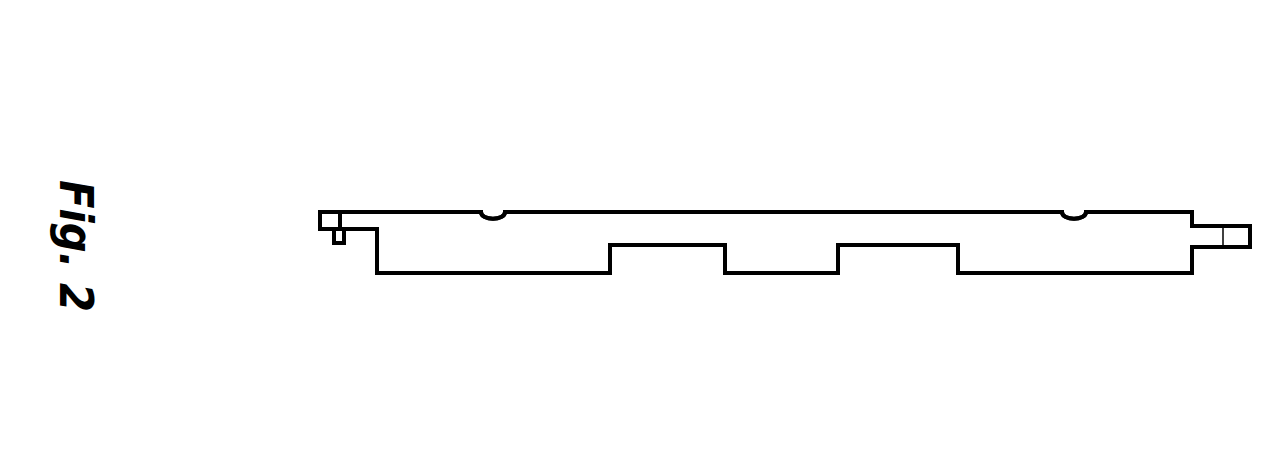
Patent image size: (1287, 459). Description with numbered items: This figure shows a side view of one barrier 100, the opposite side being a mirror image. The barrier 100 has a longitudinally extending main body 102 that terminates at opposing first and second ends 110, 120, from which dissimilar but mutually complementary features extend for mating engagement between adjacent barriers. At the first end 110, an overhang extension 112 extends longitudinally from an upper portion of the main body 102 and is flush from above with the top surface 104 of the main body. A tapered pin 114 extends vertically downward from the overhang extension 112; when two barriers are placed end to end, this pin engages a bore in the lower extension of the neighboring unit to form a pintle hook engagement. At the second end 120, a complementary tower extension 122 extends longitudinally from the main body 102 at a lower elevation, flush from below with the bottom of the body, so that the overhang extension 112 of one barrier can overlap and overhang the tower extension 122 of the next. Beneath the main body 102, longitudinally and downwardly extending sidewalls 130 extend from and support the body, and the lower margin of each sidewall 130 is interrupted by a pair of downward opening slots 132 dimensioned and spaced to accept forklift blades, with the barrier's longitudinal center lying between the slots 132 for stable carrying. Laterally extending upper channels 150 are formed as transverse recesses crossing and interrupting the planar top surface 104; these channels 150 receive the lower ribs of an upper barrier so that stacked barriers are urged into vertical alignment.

The barrier 100 is at (732, 98).
The main body 102 is at (765, 208).
The top surface 104 is at (632, 203).
The first end 110 is at (452, 208).
The overhang extension 112 is at (334, 208).
The tapered pin 114 is at (330, 245).
The second end 120 is at (1158, 208).
The tower extension 122 is at (1218, 224).
The sidewall 130 is at (505, 265).
The downward opening slot 132 is at (643, 260).
The upper channel 150 is at (492, 202).